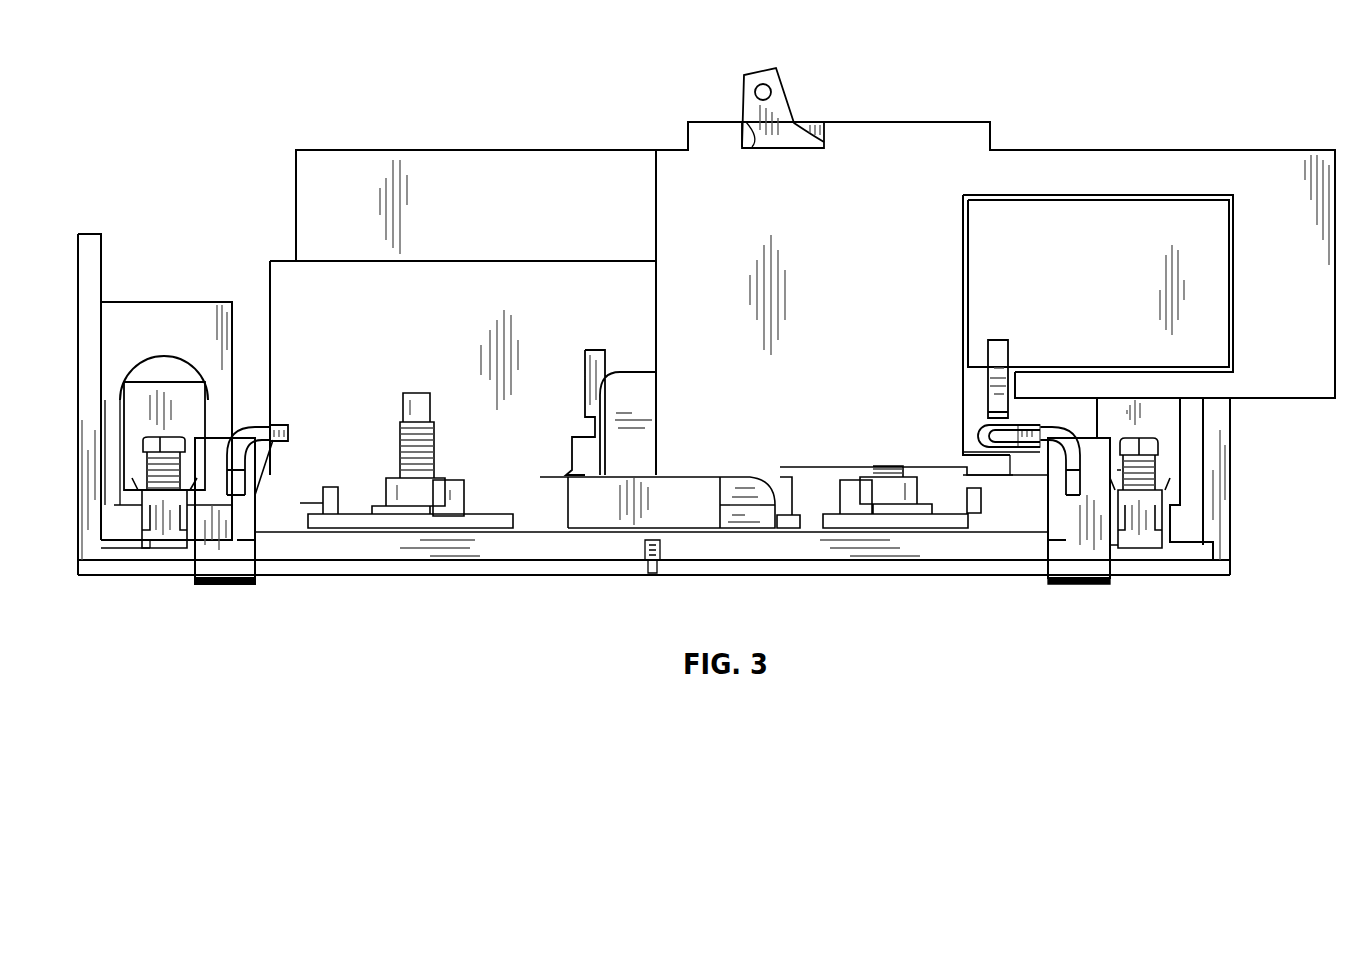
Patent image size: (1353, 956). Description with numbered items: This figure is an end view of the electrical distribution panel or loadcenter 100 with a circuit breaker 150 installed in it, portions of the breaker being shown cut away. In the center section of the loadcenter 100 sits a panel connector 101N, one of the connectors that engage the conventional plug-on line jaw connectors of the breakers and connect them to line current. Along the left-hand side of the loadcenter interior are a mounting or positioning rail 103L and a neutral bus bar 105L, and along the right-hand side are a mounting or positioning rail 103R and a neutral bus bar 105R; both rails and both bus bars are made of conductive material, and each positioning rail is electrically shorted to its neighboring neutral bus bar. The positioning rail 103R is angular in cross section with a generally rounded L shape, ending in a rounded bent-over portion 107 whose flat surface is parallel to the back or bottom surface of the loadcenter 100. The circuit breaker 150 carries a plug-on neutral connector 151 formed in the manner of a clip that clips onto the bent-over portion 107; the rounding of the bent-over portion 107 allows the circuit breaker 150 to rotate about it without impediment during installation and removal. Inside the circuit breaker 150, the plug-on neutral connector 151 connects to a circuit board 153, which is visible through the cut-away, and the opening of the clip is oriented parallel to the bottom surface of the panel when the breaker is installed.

The electrical distribution panel or loadcenter 100 is at (474, 128).
The panel connector 101N is at (628, 455).
The mounting or positioning rail 103L is at (227, 493).
The mounting or positioning rail 103R is at (1077, 487).
The neutral bus bar 105L is at (173, 537).
The neutral bus bar 105R is at (1138, 548).
The rounded bent-over portion 107 is at (1047, 442).
The circuit breaker 150 is at (1163, 150).
The plug-on neutral connector 151 is at (975, 433).
The circuit board 153 is at (1085, 278).